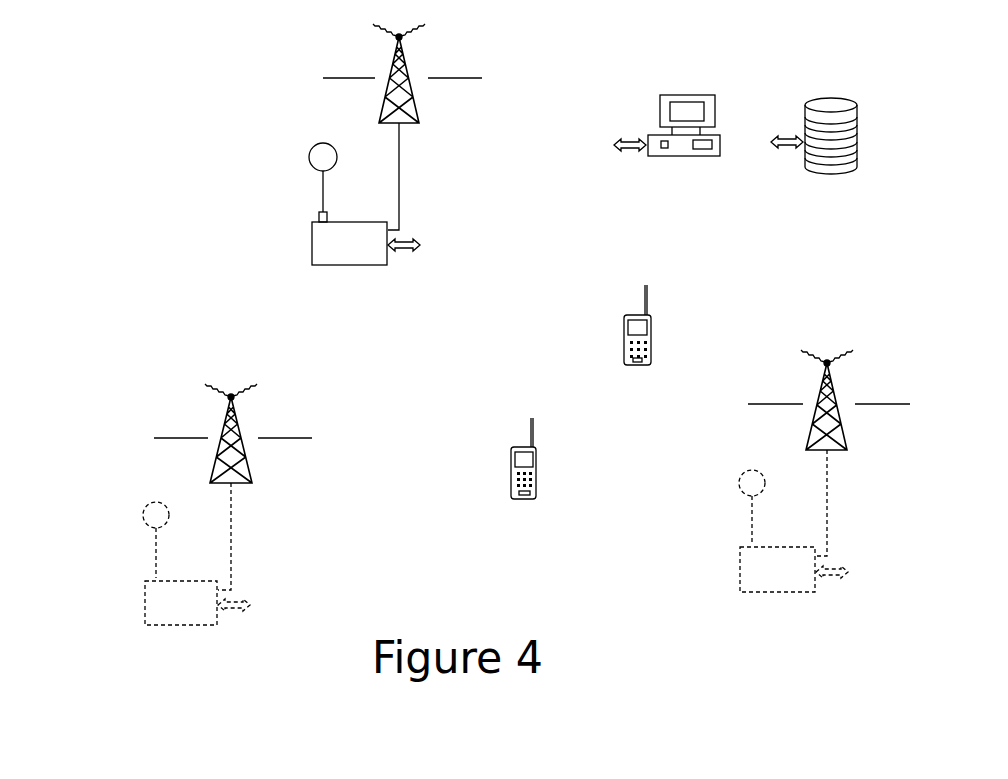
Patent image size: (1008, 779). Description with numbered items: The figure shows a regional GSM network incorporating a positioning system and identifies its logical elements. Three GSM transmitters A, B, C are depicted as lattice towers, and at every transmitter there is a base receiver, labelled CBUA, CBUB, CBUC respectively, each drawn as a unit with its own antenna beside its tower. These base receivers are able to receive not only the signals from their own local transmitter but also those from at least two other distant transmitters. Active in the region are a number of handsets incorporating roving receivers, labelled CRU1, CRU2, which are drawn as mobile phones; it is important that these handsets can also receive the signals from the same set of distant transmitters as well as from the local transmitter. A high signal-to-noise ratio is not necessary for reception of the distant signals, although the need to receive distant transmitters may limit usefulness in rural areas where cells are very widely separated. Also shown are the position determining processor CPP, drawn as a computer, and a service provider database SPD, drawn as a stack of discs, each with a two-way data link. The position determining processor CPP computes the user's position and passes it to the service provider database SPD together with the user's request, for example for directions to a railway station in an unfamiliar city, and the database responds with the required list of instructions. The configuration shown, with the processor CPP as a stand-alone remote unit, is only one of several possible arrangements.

The GSM transmitter A is at (420, 118).
The GSM transmitter B is at (243, 470).
The GSM transmitter C is at (840, 437).
The base receiver CBUA is at (316, 243).
The base receiver CBUB is at (150, 606).
The base receiver CBUC is at (746, 576).
The position determining processor CPP is at (683, 148).
The service provider database SPD is at (838, 165).
The roving receiver handset CRU1 is at (628, 350).
The roving receiver handset CRU2 is at (516, 487).